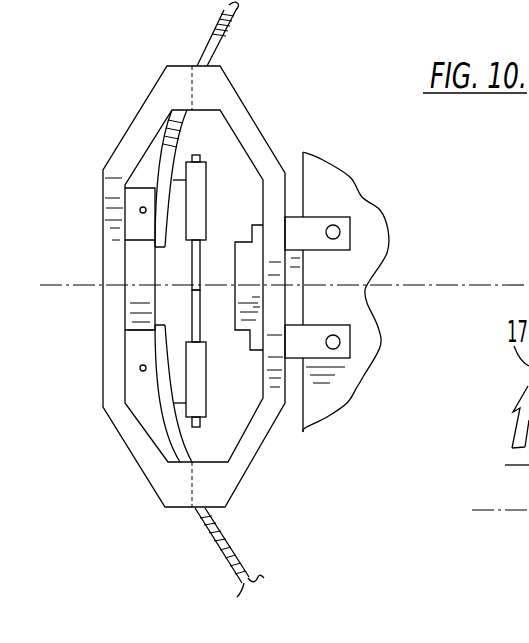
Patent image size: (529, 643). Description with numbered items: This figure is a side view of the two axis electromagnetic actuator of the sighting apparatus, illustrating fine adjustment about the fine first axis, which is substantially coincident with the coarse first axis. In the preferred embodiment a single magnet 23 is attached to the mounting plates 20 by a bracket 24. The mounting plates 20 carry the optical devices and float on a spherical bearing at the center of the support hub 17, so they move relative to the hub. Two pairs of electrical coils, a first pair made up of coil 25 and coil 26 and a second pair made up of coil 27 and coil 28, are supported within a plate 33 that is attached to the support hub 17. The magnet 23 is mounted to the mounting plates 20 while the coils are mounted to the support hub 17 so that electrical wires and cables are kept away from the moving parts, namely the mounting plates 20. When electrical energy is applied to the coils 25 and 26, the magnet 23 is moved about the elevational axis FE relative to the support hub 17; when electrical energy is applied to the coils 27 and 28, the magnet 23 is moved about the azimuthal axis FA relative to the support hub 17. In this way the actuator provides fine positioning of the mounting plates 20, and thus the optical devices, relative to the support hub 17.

The support hub 17 is at (293, 140).
The mounting plates 20 is at (365, 205).
The magnet 23 is at (268, 108).
The bracket 24 is at (292, 212).
The coil 25 is at (244, 175).
The coil 26 is at (207, 404).
The coil 27 is at (203, 273).
The coil 28 is at (202, 297).
The plate 33 is at (196, 157).